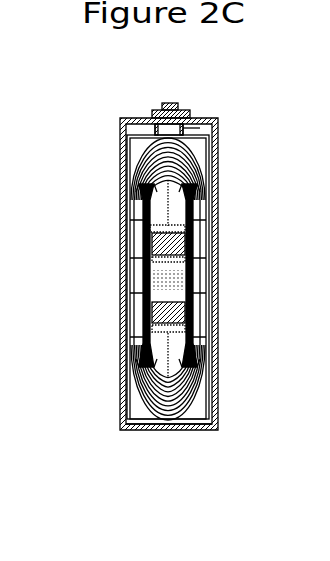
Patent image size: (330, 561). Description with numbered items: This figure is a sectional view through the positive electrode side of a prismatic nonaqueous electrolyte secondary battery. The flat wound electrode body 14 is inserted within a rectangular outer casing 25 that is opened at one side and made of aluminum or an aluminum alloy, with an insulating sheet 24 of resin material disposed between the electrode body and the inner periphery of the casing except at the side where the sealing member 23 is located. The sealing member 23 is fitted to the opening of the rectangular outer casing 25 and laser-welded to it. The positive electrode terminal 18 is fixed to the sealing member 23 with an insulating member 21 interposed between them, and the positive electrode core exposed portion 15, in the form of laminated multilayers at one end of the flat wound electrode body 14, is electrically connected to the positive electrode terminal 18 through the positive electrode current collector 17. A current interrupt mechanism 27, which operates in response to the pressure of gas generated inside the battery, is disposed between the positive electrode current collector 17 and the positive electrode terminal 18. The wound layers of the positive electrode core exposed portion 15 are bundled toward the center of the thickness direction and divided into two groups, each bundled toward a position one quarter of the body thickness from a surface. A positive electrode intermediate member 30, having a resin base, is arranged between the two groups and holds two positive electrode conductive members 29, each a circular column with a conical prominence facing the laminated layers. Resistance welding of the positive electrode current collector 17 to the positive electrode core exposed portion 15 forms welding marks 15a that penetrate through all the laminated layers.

The flat wound electrode body 14 is at (196, 351).
The positive electrode core exposed portion 15 is at (158, 345).
The welding mark 15a is at (157, 242).
The positive electrode current collector 17 is at (198, 203).
The positive electrode terminal 18 is at (163, 104).
The insulating member 21 is at (148, 117).
The sealing member 23 is at (204, 121).
The insulating sheet 24 is at (121, 418).
The rectangular outer casing 25 is at (190, 431).
The current interrupt mechanism 27 is at (120, 131).
The positive electrode conductive member 29 is at (141, 232).
The positive electrode intermediate member 30 is at (176, 348).